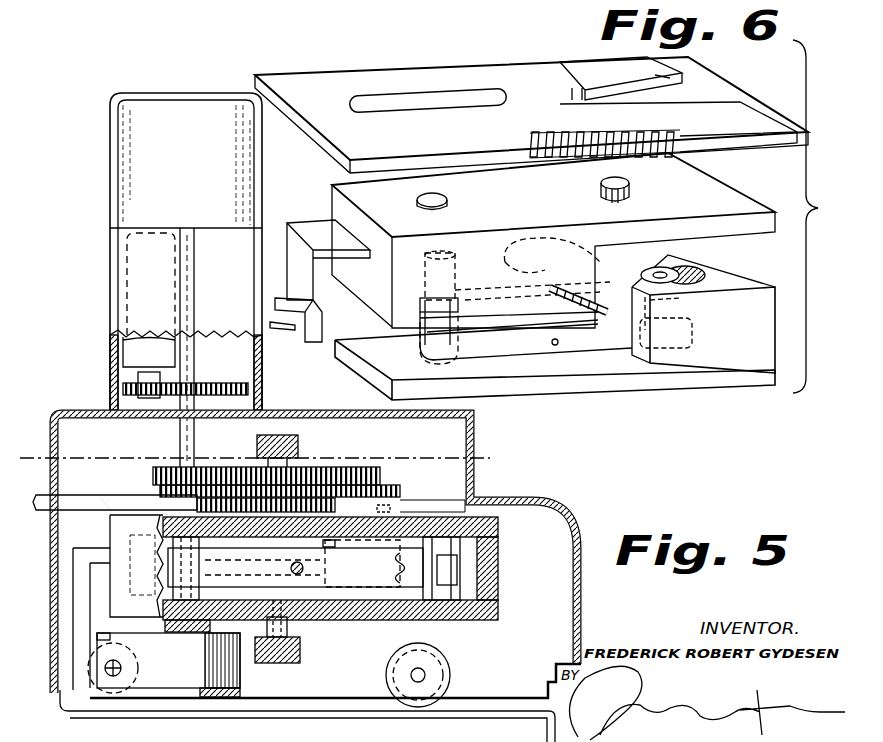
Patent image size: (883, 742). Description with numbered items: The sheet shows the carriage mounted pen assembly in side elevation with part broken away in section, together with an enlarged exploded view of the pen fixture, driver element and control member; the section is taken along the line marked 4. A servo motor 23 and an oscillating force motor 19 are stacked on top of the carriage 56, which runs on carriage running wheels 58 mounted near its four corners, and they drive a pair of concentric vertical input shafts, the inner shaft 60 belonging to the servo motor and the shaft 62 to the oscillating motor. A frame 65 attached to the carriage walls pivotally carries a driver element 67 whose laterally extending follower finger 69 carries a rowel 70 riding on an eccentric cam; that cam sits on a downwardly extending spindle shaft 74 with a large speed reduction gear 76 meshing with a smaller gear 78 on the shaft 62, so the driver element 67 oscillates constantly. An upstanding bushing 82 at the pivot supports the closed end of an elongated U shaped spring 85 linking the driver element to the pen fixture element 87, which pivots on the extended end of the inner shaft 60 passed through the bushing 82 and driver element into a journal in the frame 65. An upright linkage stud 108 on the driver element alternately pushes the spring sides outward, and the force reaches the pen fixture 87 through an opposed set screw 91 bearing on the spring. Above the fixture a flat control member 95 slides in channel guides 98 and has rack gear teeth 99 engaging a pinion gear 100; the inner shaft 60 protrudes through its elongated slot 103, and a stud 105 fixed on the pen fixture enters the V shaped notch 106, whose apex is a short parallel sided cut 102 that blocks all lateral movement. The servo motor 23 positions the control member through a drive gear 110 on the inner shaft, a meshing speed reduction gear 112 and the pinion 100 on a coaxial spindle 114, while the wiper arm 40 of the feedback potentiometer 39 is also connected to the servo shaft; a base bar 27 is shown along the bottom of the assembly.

In FIG. 5, the section line 4- 4 is at (36, 462).
In FIG. 5, the oscillating force motor 19 is at (132, 270).
In FIG. 6, the servo motor 23 is at (266, 246).
In FIG. 5, the servo motor 23 is at (118, 150).
In FIG. 5, the base bar 27 is at (494, 727).
In FIG. 5, the servo position feedback potentiometer 39 is at (240, 680).
In FIG. 5, the wiper arm 40 is at (115, 647).
In FIG. 5, the carriage 56 is at (293, 412).
In FIG. 5, the carriage running wheels 58 is at (452, 668).
In FIG. 5, the inner input shaft 60 is at (196, 358).
In FIG. 5, the oscillating force motor shaft 62 is at (195, 431).
In FIG. 5, the frame 65 is at (212, 628).
In FIG. 6, the driver element 67 is at (740, 375).
In FIG. 5, the driver element 67 is at (498, 616).
In FIG. 6, the follower finger 69 is at (520, 280).
In FIG. 5, the follower finger 69 is at (355, 566).
In FIG. 6, the rowel 70 is at (505, 262).
In FIG. 5, the spindle shaft 74 is at (268, 592).
In FIG. 5, the speed reduction gear 76 is at (358, 472).
In FIG. 5, the gear 78 is at (165, 468).
In FIG. 6, the bushing 82 is at (420, 340).
In FIG. 5, the bushing 82 is at (205, 595).
In FIG. 6, the U shaped spring 85 is at (515, 352).
In FIG. 5, the U shaped spring 85 is at (401, 590).
In FIG. 6, the pen fixture element 87 is at (758, 210).
In FIG. 5, the pen fixture element 87 is at (110, 573).
In FIG. 6, the set screw 91 is at (605, 313).
In FIG. 5, the set screw 91 is at (305, 572).
In FIG. 6, the control member 95 is at (505, 64).
In FIG. 5, the channel guide 98 is at (36, 512).
In FIG. 6, the rack gear teeth 99 is at (556, 142).
In FIG. 5, the rack gear teeth 99 is at (327, 480).
In FIG. 5, the pinion gear 100 is at (300, 458).
In FIG. 6, the parallel sided cut 102 is at (575, 90).
In FIG. 6, the elongated slot 103 is at (378, 100).
In FIG. 5, the elongated slot 103 is at (105, 497).
In FIG. 6, the stud 105 is at (601, 187).
In FIG. 5, the stud 105 is at (350, 553).
In FIG. 6, the V shaped notch 106 is at (652, 80).
In FIG. 6, the linkage stud 108 is at (680, 268).
In FIG. 5, the linkage stud 108 is at (455, 577).
In FIG. 5, the drive gear 110 is at (152, 506).
In FIG. 5, the speed reduction gear 112 is at (393, 481).
In FIG. 5, the spindle 114 is at (296, 634).